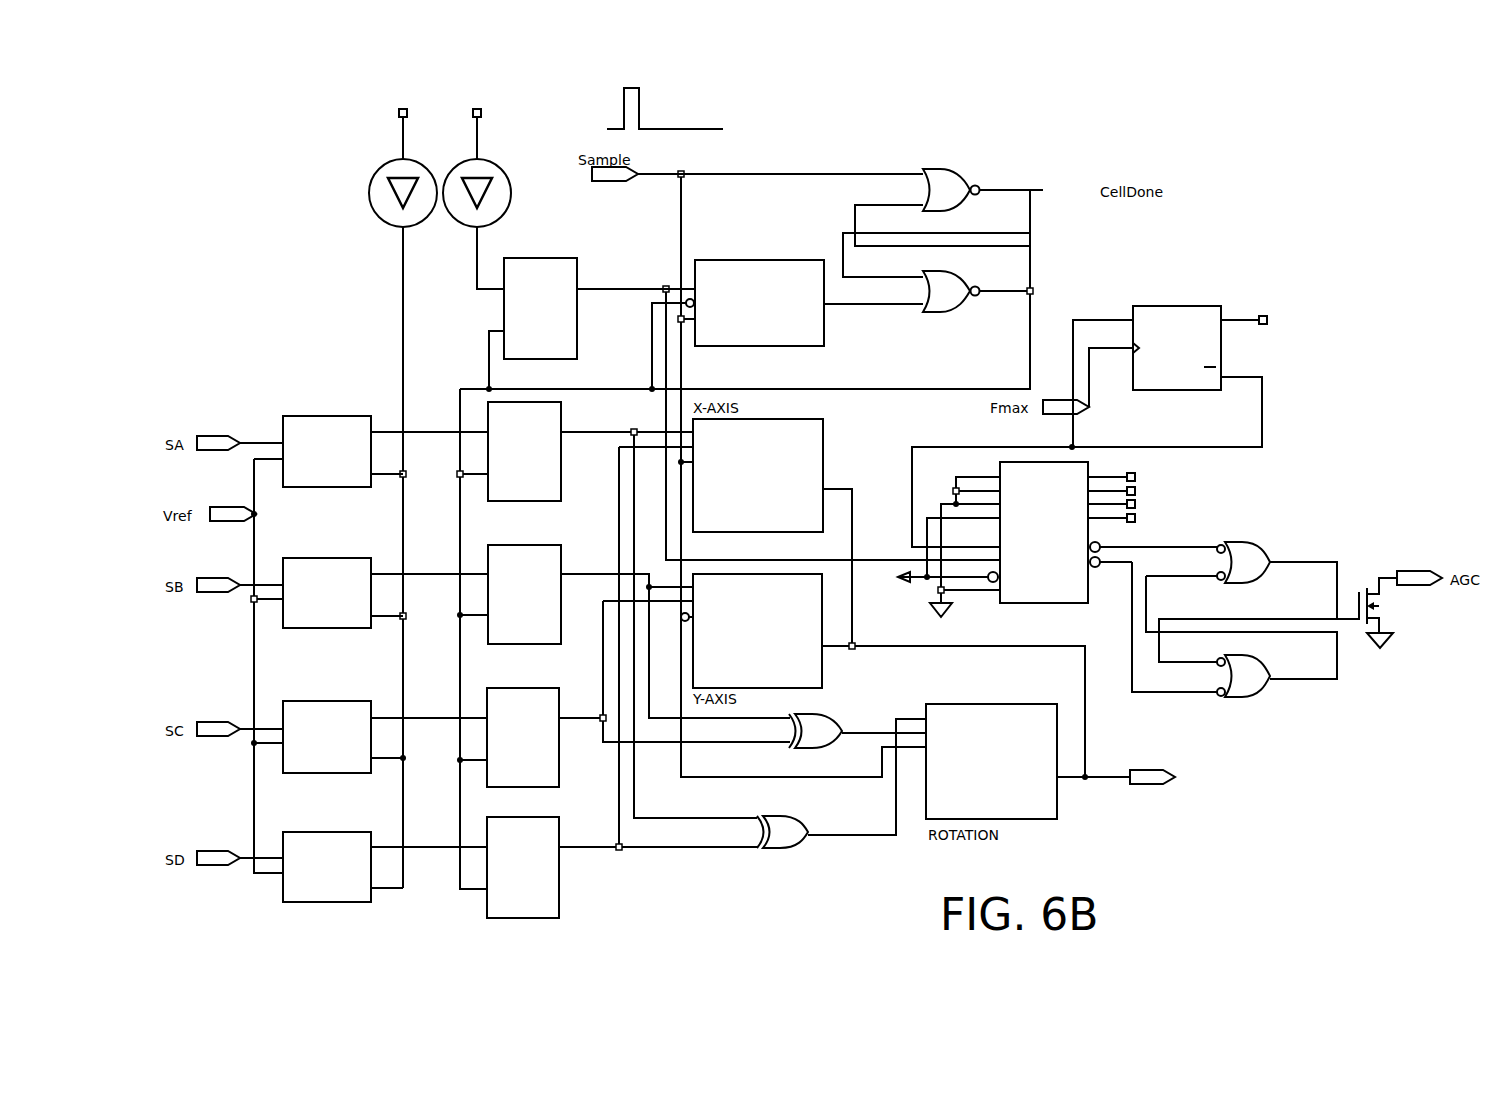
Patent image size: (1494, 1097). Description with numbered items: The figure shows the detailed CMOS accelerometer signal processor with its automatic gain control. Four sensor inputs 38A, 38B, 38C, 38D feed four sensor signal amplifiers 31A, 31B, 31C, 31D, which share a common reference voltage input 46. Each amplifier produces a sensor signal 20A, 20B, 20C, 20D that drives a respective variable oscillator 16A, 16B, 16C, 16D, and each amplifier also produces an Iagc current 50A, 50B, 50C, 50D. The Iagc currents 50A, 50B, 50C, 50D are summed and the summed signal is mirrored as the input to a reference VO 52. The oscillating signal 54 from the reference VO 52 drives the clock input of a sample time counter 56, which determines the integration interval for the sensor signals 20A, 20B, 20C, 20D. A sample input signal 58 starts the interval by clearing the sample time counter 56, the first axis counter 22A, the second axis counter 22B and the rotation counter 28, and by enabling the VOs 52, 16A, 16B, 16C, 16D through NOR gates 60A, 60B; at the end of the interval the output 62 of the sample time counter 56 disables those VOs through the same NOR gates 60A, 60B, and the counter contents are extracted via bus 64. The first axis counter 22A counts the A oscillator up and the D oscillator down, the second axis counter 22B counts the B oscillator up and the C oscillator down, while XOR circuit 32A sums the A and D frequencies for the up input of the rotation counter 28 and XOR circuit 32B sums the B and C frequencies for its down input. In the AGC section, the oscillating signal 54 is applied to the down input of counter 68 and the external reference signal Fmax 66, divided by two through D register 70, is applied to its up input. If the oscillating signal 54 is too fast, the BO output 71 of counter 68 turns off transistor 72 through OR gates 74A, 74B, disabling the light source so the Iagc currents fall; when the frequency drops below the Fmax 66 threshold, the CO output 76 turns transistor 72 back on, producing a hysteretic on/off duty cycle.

The signal input SA 38A is at (220, 436).
The signal input SB 38B is at (220, 578).
The signal input SC 38C is at (220, 722).
The signal input SD 38D is at (220, 851).
The reference voltage input Vref 46 is at (232, 507).
The sensor signal amplifier 31A is at (325, 416).
The sensor signal amplifier 31B is at (326, 558).
The sensor signal amplifier 31C is at (326, 701).
The sensor signal amplifier 31D is at (326, 832).
The Iagc current 50A is at (378, 480).
The Iagc current 50B is at (380, 622).
The Iagc current 50C is at (380, 764).
The Iagc current 50D is at (380, 894).
The A sensor signal 20A is at (430, 438).
The B sensor signal 20B is at (430, 580).
The C sensor signal 20C is at (430, 724).
The D sensor signal 20D is at (430, 853).
The A variable oscillator 16A is at (561, 494).
The B variable oscillator 16B is at (561, 638).
The C variable oscillator 16C is at (559, 781).
The D variable oscillator 16D is at (559, 910).
The reference variable oscillator 52 is at (577, 345).
The oscillating signal 54 is at (620, 288).
The sample time counter 56 is at (812, 346).
The sample input signal 58 is at (606, 182).
The NOR gate 60A is at (942, 169).
The NOR gate 60B is at (935, 312).
The output of the sample time counter 62 is at (876, 306).
The reference signal Fmax 66 is at (1050, 414).
The D register 70 is at (1178, 306).
The first axis counter 22A is at (823, 440).
The second axis counter 22B is at (822, 672).
The XOR circuit 32A is at (825, 736).
The XOR circuit 32B is at (786, 850).
The rotation counter 28 is at (1057, 808).
The bus 64 is at (1158, 785).
The counter 68 is at (1048, 603).
The BO output 71 is at (1103, 568).
The transistor 72 is at (1365, 576).
The OR gate 74A is at (1247, 544).
The OR gate 74B is at (1243, 699).
The CO output 76 is at (1188, 545).